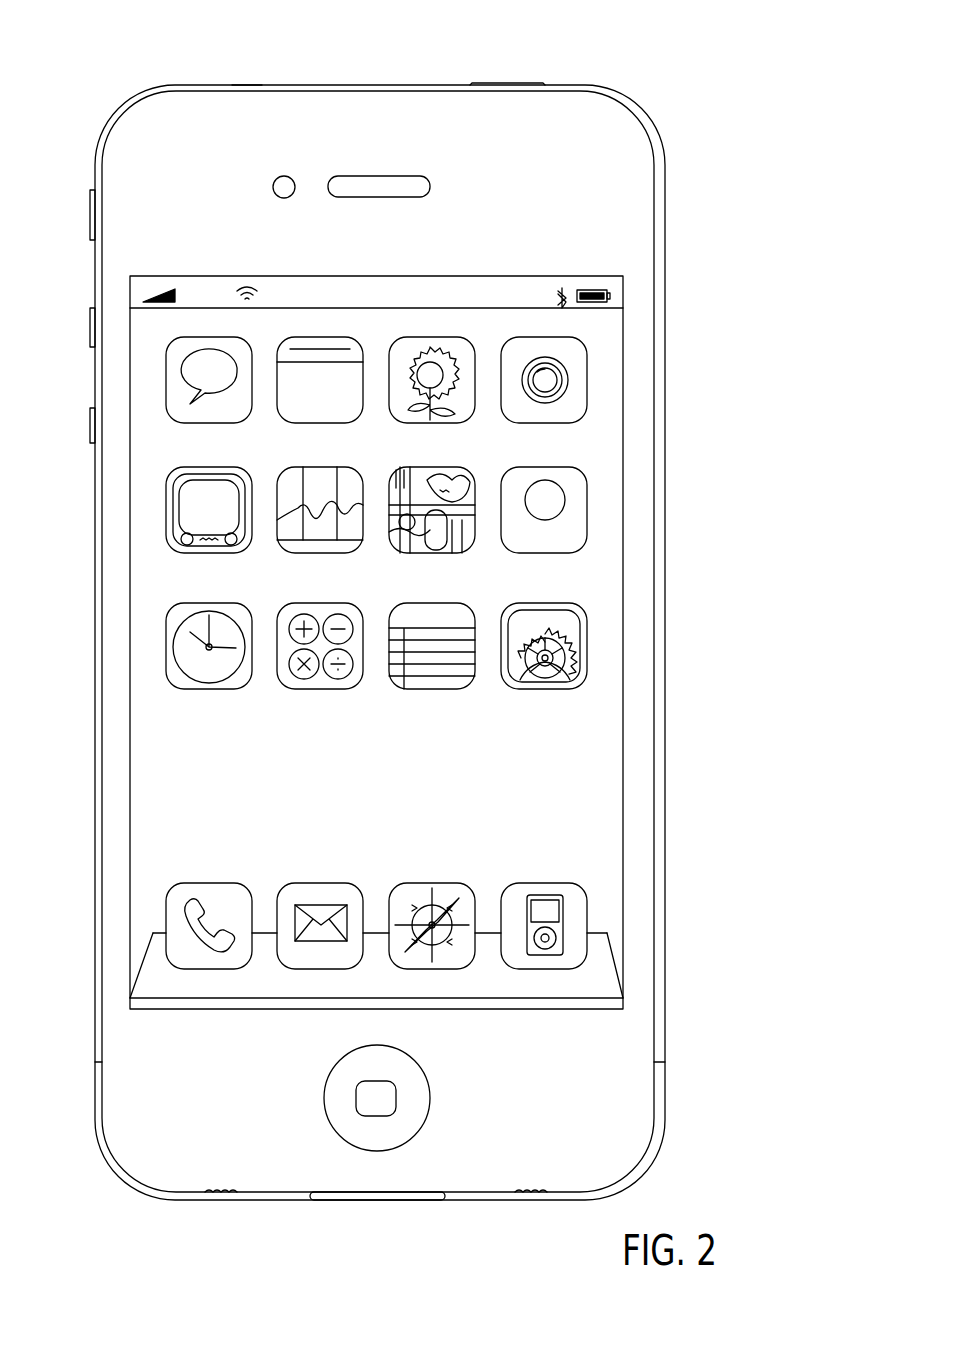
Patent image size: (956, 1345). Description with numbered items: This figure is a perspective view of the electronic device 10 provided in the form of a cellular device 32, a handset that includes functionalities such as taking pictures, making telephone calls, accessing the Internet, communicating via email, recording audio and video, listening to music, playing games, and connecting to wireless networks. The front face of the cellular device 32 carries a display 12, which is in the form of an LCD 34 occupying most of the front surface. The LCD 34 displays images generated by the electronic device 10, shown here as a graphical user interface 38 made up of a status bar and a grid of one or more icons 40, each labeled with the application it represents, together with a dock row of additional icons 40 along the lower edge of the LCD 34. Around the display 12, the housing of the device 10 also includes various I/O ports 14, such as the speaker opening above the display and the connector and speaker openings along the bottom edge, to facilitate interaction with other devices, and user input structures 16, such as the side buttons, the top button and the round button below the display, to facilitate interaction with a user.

The electronic device 10 is at (188, 43).
The display 12 is at (625, 611).
The I/O ports 14 is at (248, 85).
The user input structures 16 is at (90, 218).
The cellular device 32 is at (667, 268).
The LCD 34 is at (587, 825).
The graphical user interface 38 is at (165, 805).
The icons 40 is at (168, 290).